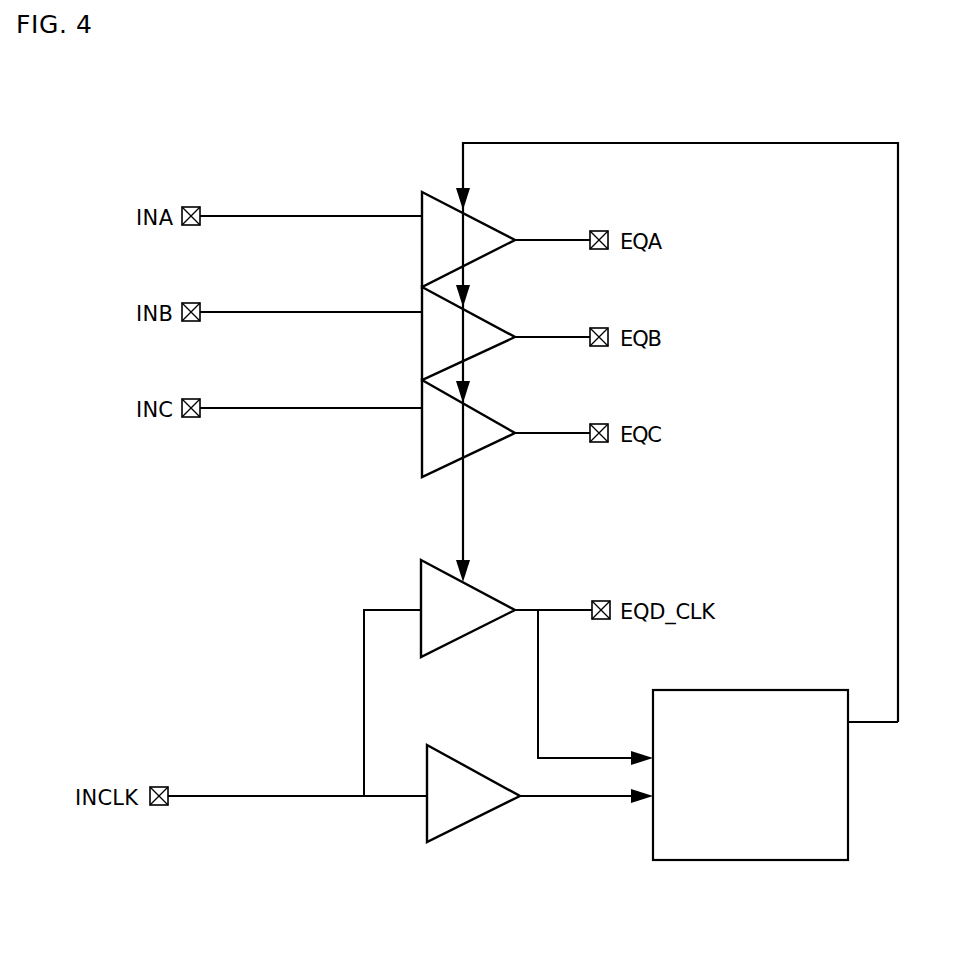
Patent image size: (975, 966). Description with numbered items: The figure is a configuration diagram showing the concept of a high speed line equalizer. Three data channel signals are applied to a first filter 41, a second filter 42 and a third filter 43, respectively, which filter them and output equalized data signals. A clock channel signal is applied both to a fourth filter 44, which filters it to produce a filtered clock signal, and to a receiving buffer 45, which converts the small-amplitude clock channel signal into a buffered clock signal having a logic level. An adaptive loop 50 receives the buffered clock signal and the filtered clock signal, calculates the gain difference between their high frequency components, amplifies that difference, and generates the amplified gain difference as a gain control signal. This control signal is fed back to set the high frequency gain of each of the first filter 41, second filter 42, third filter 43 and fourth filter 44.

The first filter 41 is at (420, 254).
The second filter 42 is at (420, 353).
The third filter 43 is at (420, 445).
The fourth filter 44 is at (492, 597).
The receiving buffer 45 is at (465, 823).
The adaptive loop 50 is at (751, 861).